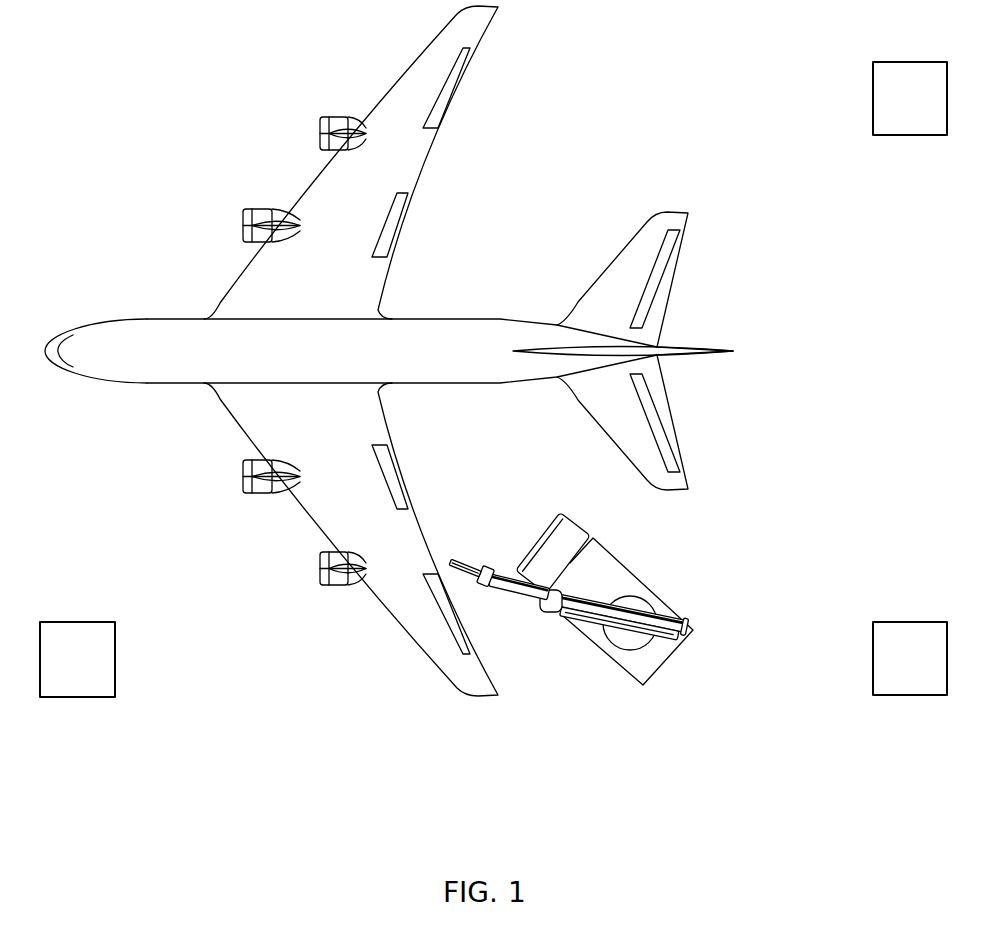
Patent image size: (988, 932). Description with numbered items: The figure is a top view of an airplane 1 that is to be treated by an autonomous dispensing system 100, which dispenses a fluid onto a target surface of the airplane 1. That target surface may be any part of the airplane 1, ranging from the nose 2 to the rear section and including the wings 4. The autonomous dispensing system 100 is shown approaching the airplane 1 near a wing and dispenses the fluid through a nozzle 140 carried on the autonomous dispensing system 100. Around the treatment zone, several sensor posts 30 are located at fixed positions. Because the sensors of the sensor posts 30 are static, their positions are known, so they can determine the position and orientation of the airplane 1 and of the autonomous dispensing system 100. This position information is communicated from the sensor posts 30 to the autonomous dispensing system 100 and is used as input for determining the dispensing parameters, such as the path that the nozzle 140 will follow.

The airplane 1 is at (165, 319).
The nose 2 is at (62, 345).
The wings 4 is at (403, 562).
The sensor posts 30 is at (897, 135).
The autonomous dispensing system 100 is at (657, 677).
The nozzle 140 is at (449, 566).